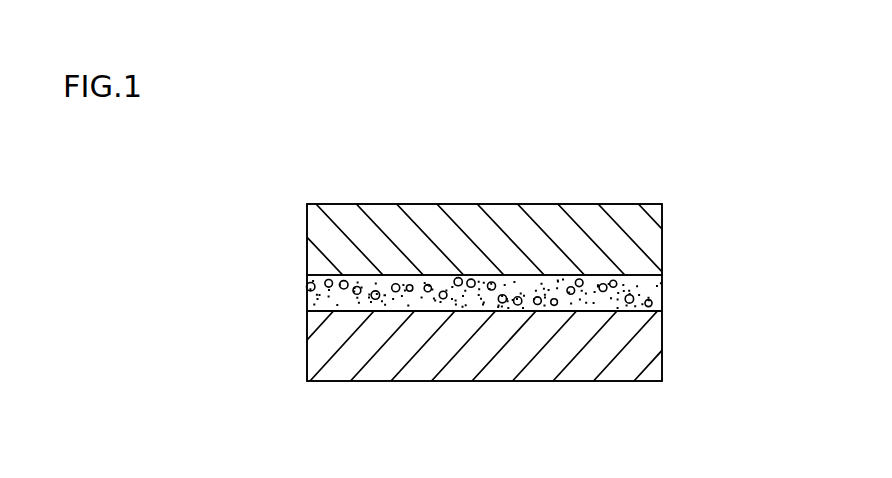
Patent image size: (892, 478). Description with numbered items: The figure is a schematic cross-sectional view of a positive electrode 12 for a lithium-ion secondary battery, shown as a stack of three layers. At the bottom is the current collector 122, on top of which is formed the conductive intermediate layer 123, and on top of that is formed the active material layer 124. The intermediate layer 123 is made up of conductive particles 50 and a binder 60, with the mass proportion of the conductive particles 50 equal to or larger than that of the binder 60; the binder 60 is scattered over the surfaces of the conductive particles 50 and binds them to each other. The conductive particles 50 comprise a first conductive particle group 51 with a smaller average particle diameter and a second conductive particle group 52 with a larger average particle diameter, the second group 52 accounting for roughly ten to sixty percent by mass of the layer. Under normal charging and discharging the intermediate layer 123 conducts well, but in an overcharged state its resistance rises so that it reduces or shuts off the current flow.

The positive electrode 12 is at (620, 186).
The active material layer 124 is at (307, 245).
The conductive intermediate layer 123 is at (297, 275).
The current collector 122 is at (307, 345).
The conductive particles 50 is at (557, 272).
The second conductive particle group 52 is at (581, 278).
The first conductive particle group 51 is at (522, 289).
The binder 60 is at (662, 311).